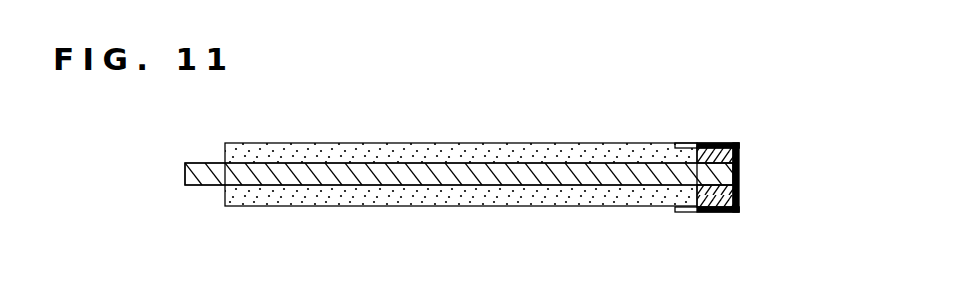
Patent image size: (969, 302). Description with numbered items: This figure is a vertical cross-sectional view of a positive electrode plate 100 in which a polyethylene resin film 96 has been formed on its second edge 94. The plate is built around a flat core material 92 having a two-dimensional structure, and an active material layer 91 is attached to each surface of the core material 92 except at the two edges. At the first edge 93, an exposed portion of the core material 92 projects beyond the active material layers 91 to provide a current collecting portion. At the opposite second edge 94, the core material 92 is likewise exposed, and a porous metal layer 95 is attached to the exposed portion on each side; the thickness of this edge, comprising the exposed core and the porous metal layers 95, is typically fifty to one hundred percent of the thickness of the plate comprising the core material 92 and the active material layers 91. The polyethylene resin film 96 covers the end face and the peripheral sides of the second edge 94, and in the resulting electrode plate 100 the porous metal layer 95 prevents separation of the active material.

The electrode plate 100 is at (534, 142).
The active material layer 91 is at (636, 156).
The core material 92 is at (430, 177).
The first edge 93 is at (200, 171).
The second edge 94 is at (712, 177).
The porous metal layer 95 is at (715, 152).
The polyethylene resin film 96 is at (737, 196).